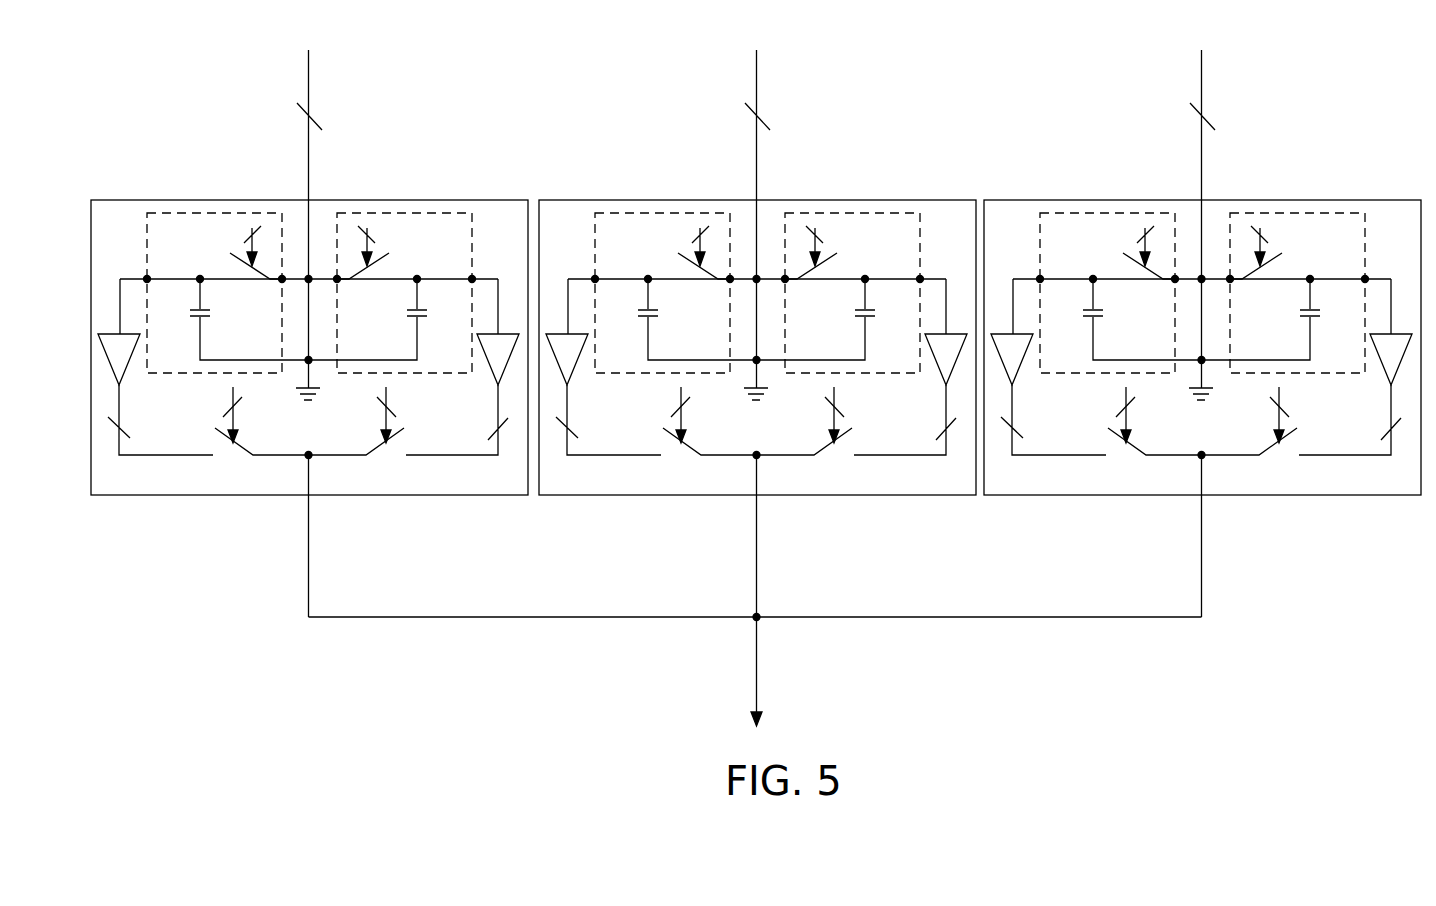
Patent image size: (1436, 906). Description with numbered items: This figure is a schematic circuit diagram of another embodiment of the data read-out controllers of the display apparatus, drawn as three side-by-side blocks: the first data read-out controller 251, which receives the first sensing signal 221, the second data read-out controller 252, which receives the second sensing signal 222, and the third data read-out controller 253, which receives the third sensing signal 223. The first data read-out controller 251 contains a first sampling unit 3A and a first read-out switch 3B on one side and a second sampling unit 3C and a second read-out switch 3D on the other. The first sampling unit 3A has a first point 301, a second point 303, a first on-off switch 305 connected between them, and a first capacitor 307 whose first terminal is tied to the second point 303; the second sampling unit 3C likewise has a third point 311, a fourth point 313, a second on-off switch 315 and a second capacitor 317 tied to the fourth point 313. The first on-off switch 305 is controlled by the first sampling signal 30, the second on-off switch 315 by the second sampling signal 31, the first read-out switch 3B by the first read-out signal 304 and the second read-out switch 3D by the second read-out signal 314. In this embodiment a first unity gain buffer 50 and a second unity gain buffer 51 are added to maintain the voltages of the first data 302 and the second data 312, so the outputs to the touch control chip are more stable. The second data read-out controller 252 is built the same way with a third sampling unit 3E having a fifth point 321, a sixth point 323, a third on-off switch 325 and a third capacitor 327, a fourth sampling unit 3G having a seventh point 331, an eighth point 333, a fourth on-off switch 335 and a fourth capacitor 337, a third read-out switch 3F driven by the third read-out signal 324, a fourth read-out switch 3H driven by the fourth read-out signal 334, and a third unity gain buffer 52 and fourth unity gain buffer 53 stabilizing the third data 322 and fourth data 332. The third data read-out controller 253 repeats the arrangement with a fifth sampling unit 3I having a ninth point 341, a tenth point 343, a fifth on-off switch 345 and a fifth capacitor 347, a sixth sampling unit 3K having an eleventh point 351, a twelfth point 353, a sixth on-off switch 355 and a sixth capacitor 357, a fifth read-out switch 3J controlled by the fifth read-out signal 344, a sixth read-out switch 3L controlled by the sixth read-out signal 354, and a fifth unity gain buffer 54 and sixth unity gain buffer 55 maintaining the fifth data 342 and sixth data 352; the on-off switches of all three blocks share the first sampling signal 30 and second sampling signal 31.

The first sensing signal 221 is at (309, 112).
The second sensing signal 222 is at (795, 164).
The third sensing signal 223 is at (1240, 164).
The first data read-out controller 251 is at (417, 200).
The second data read-out controller 252 is at (757, 315).
The third data read-out controller 253 is at (1202, 315).
The first sampling signal 30 is at (246, 238).
The second sampling signal 31 is at (371, 231).
The second point 303 is at (147, 279).
The fourth point 313 is at (472, 279).
The first point 301 is at (282, 282).
The third point 311 is at (337, 282).
The first on-off switch 305 is at (245, 288).
The second on-off switch 315 is at (382, 288).
The first capacitor 307 is at (187, 320).
The second capacitor 317 is at (441, 316).
The first sampling unit 3A is at (222, 376).
The first read-out switch 3B is at (242, 441).
The second sampling unit 3C is at (398, 377).
The second read-out switch 3D is at (388, 441).
The first unity gain buffer 50 is at (128, 368).
The second unity gain buffer 51 is at (481, 378).
The first data 302 is at (110, 432).
The second data 312 is at (505, 432).
The first read-out signal 304 is at (274, 421).
The second read-out signal 314 is at (381, 410).
The sixth point 323 is at (577, 256).
The eighth point 333 is at (950, 256).
The fifth point 321 is at (703, 321).
The seventh point 331 is at (822, 326).
The third on-off switch 325 is at (698, 309).
The fourth on-off switch 335 is at (833, 309).
The third capacitor 327 is at (682, 322).
The fourth capacitor 337 is at (843, 325).
The third sampling unit 3E is at (662, 312).
The third read-out switch 3F is at (690, 441).
The fourth sampling unit 3G is at (852, 312).
The fourth read-out switch 3H is at (836, 441).
The third unity gain buffer 52 is at (592, 386).
The fourth unity gain buffer 53 is at (929, 387).
The third data 322 is at (731, 487).
The fourth data 332 is at (919, 440).
The third read-out signal 324 is at (722, 421).
The fourth read-out signal 334 is at (801, 421).
The tenth point 343 is at (1022, 256).
The twelfth point 353 is at (1395, 256).
The ninth point 341 is at (1148, 321).
The eleventh point 351 is at (1267, 326).
The fifth on-off switch 345 is at (1143, 309).
The sixth on-off switch 355 is at (1278, 309).
The fifth capacitor 347 is at (1127, 322).
The sixth capacitor 357 is at (1288, 325).
The fifth sampling unit 3I is at (1107, 312).
The fifth read-out switch 3J is at (1135, 441).
The sixth sampling unit 3K is at (1297, 312).
The sixth read-out switch 3L is at (1278, 441).
The fifth unity gain buffer 54 is at (1037, 386).
The sixth unity gain buffer 55 is at (1374, 387).
The fifth data 342 is at (1176, 487).
The sixth data 352 is at (1364, 440).
The fifth read-out signal 344 is at (1167, 421).
The sixth read-out signal 354 is at (1246, 421).